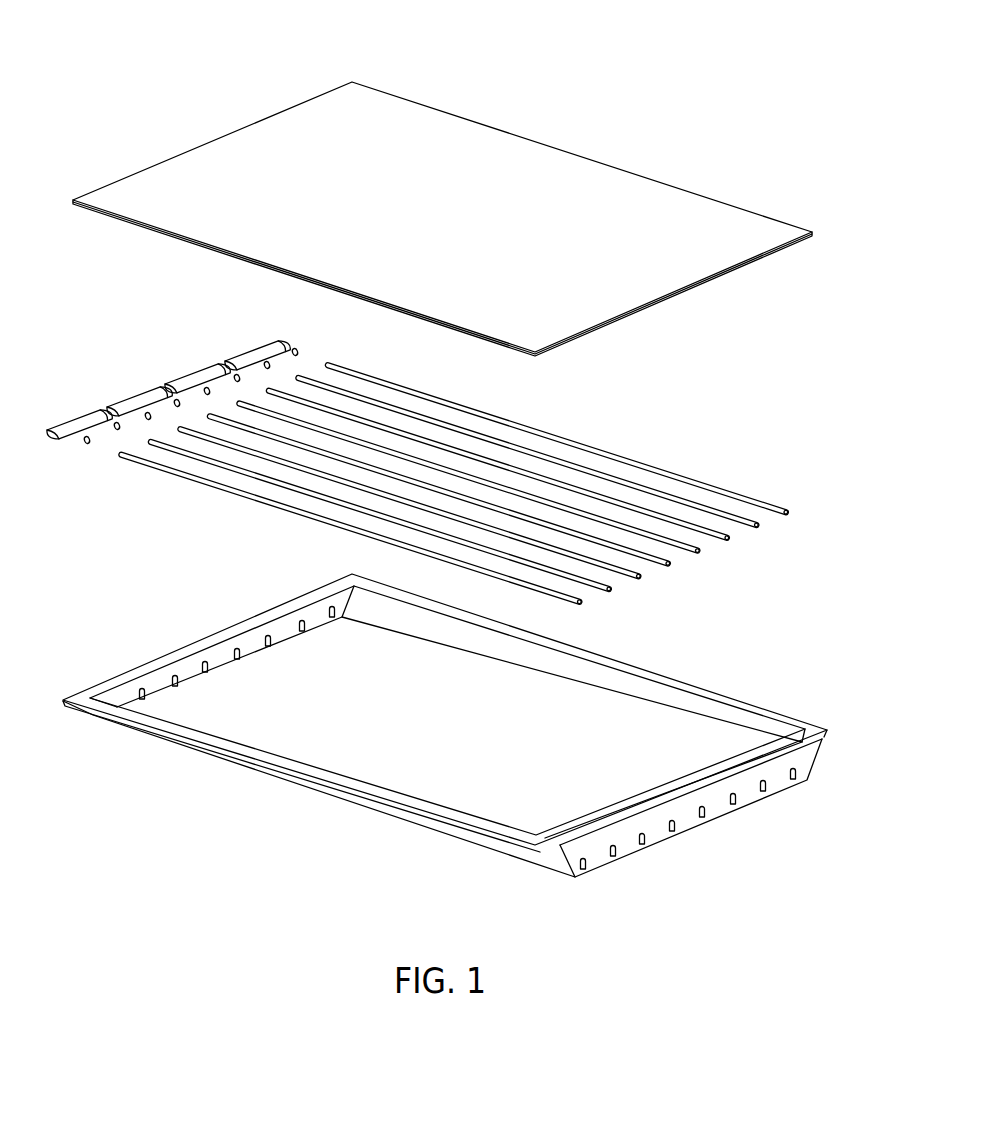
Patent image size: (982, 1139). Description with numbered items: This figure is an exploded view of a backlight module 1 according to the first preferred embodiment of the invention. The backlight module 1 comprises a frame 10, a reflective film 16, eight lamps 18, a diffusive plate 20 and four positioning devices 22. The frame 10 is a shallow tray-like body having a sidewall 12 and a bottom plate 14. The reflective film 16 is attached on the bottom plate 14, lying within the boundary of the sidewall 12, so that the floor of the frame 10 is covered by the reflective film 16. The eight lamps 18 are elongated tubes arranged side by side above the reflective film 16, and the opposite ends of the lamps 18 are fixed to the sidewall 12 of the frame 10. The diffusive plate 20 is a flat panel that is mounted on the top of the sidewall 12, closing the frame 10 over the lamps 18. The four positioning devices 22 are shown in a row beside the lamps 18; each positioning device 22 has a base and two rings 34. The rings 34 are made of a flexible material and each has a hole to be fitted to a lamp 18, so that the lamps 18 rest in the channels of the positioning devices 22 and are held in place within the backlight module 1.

The backlight module 1 is at (625, 76).
The frame 10 is at (479, 749).
The sidewall 12 is at (797, 758).
The bottom plate 14 is at (584, 871).
The reflective film 16 is at (657, 745).
The lamps 18 is at (753, 520).
The diffusive plate 20 is at (708, 221).
The positioning devices 22 is at (55, 404).
The rings 34 is at (116, 431).